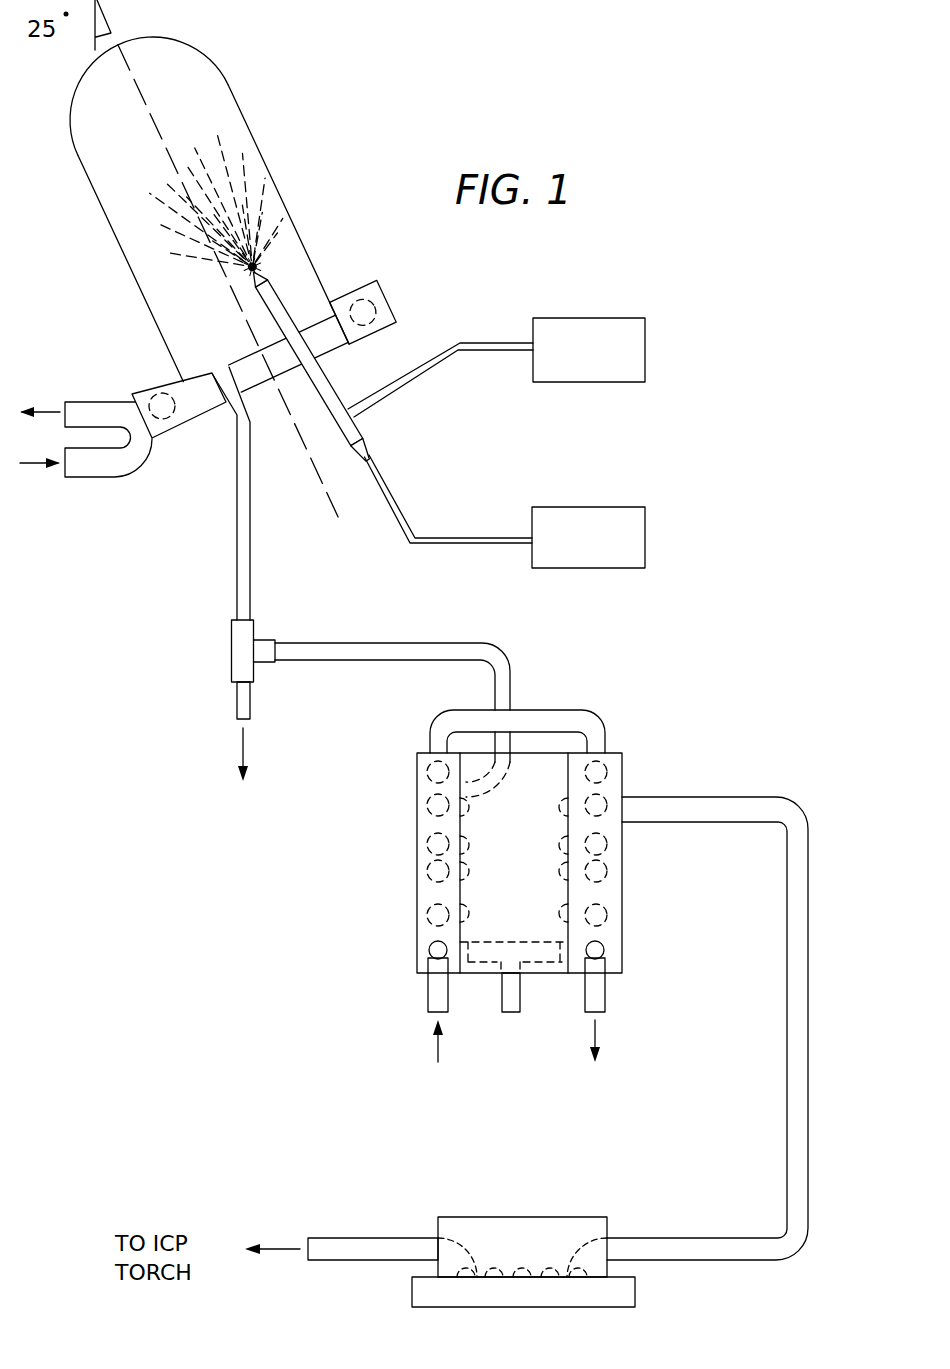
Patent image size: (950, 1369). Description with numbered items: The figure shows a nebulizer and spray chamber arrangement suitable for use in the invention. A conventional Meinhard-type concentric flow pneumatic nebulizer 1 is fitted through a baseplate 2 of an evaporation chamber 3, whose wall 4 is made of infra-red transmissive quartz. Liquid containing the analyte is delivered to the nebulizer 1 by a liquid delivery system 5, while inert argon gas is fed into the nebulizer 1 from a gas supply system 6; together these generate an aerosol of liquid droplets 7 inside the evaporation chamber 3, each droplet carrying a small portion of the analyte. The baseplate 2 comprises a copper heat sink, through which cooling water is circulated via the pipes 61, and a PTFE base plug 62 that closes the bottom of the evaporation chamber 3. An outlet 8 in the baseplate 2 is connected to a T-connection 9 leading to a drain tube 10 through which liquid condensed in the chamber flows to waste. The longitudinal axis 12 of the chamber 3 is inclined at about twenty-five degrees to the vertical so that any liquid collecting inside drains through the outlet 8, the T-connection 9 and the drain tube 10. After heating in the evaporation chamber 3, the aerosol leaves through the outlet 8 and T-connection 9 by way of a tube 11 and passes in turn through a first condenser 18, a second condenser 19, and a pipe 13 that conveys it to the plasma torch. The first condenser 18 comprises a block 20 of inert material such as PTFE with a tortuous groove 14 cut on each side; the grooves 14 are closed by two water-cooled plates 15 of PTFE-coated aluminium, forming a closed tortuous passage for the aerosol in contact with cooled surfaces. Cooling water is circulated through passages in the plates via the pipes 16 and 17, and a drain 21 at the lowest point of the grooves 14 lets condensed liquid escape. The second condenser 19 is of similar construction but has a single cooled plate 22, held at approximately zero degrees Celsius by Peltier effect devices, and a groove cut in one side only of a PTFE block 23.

The concentric flow pneumatic nebulizer 1 is at (335, 384).
The baseplate 2 is at (378, 280).
The evaporation chamber 3 is at (178, 96).
The wall 4 is at (231, 90).
The liquid delivery system 5 is at (596, 550).
The gas supply system 6 is at (597, 363).
The aerosol of liquid droplets 7 is at (249, 172).
The outlet 8 is at (213, 378).
The T-connection 9 is at (230, 626).
The drain tube 10 is at (240, 737).
The tube 11 is at (496, 655).
The longitudinal axis 12 is at (322, 500).
The pipe 13 is at (330, 1242).
The tortuous groove 14 is at (578, 890).
The water-cooled plate 15 is at (420, 882).
The pipe 16 is at (433, 1001).
The pipe 17 is at (600, 1001).
The first condenser 18 is at (622, 745).
The second condenser 19 is at (472, 1212).
The block 20 is at (531, 762).
The drain 21 is at (517, 998).
The cooled plate 22 is at (622, 1298).
The PTFE block 23 is at (598, 1226).
The pipes 61 is at (78, 410).
The base plug 62 is at (256, 382).